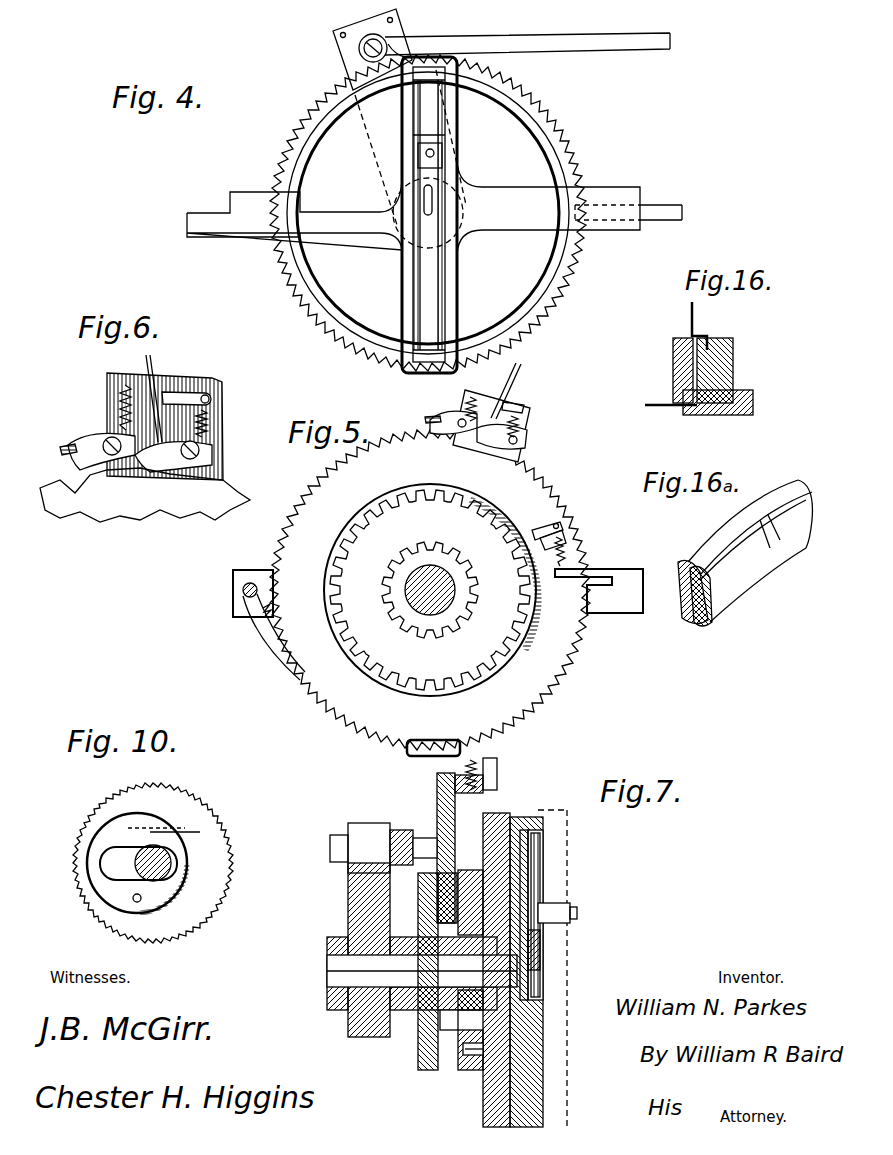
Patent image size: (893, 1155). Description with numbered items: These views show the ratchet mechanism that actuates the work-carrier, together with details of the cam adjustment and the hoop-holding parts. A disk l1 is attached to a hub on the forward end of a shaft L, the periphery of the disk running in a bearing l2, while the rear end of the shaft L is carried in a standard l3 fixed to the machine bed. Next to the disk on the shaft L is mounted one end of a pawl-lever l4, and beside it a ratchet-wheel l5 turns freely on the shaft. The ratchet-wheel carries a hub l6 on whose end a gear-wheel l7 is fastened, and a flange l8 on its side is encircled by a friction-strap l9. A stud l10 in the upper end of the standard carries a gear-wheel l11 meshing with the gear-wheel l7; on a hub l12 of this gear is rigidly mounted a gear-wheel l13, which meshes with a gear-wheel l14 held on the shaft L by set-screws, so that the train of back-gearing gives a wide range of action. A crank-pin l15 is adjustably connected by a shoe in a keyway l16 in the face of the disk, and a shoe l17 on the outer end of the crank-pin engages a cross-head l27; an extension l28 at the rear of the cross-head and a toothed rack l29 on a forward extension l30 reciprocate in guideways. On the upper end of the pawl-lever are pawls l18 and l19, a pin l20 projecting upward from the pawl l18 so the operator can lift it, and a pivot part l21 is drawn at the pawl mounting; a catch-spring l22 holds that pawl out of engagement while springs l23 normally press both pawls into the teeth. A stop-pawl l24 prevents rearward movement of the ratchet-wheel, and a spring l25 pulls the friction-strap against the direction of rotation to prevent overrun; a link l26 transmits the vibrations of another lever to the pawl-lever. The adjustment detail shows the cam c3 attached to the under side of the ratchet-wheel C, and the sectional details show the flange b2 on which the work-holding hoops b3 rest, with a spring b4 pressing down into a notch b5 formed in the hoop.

In FIG. 4, the disk l1 is at (428, 213).
In FIG. 7, the disk l1 is at (543, 1033).
In FIG. 7, the bearing l2 is at (535, 818).
In FIG. 7, the standard l3 is at (350, 896).
In FIG. 6, the pawl-lever l4 is at (195, 392).
In FIG. 5, the pawl-lever l4 is at (520, 452).
In FIG. 7, the pawl-lever l4 is at (510, 820).
In FIG. 6, the ratchet-wheel l5 is at (145, 495).
In FIG. 5, the ratchet-wheel l5 is at (430, 593).
In FIG. 7, the ratchet-wheel l5 is at (480, 840).
In FIG. 7, the hub l6 is at (470, 998).
In FIG. 5, the gear-wheel l7 is at (415, 590).
In FIG. 7, the gear-wheel l7 is at (449, 1039).
In FIG. 7, the flange l8 is at (460, 1065).
In FIG. 5, the friction-strap l9 is at (530, 555).
In FIG. 7, the friction-strap l9 is at (472, 1060).
In FIG. 7, the stud l10 is at (430, 840).
In FIG. 7, the gear-wheel l11 is at (455, 780).
In FIG. 7, the hub l12 is at (410, 830).
In FIG. 7, the gear-wheel l13 is at (438, 820).
In FIG. 4, the gear-wheel l14 is at (340, 42).
In FIG. 5, the gear-wheel l14 is at (431, 590).
In FIG. 7, the gear-wheel l14 is at (416, 1030).
In FIG. 4, the crank-pin l15 is at (441, 150).
In FIG. 7, the crank-pin l15 is at (570, 915).
In FIG. 7, the keyway l16 is at (540, 872).
In FIG. 4, the shoe l17 is at (440, 157).
In FIG. 7, the shoe l17 is at (537, 936).
In FIG. 6, the pawl l18 is at (165, 458).
In FIG. 5, the pawl l18 is at (497, 443).
In FIG. 7, the pawl l18 is at (478, 779).
In FIG. 6, the pawl l19 is at (100, 440).
In FIG. 5, the pawl l19 is at (458, 415).
In FIG. 6, the pin l20 is at (155, 372).
In FIG. 5, the pin l20 is at (515, 383).
In FIG. 5, the pin l21 is at (517, 406).
In FIG. 6, the catch-spring l22 is at (209, 396).
In FIG. 6, the springs l23 is at (120, 406).
In FIG. 5, the springs l23 is at (474, 400).
In FIG. 5, the stop-pawl l24 is at (262, 650).
In FIG. 5, the spring l25 is at (568, 558).
In FIG. 4, the link l26 is at (514, 57).
In FIG. 4, the cross-head l27 is at (406, 293).
In FIG. 4, the extension l28 is at (250, 243).
In FIG. 4, the toothed rack l29 is at (685, 212).
In FIG. 4, the forward extension l30 is at (600, 230).
In FIG. 7, the shaft L is at (327, 972).
In FIG. 10, the ratchet-wheel C is at (153, 863).
In FIG. 10, the cam c3 is at (143, 863).
In FIG. 16, the flange b2 is at (680, 412).
In FIG. 16, the work-holding hoops b3 is at (690, 368).
In FIG. 16A, the work-holding hoops b3 is at (690, 624).
In FIG. 16, the spring b4 is at (695, 311).
In FIG. 16A, the notch b5 is at (787, 552).